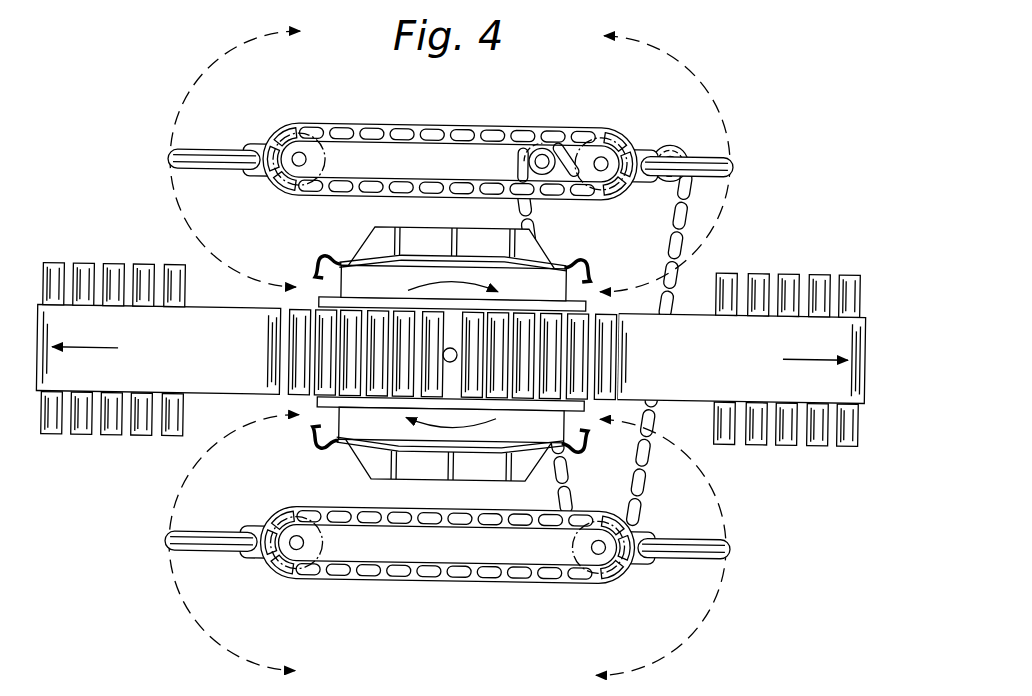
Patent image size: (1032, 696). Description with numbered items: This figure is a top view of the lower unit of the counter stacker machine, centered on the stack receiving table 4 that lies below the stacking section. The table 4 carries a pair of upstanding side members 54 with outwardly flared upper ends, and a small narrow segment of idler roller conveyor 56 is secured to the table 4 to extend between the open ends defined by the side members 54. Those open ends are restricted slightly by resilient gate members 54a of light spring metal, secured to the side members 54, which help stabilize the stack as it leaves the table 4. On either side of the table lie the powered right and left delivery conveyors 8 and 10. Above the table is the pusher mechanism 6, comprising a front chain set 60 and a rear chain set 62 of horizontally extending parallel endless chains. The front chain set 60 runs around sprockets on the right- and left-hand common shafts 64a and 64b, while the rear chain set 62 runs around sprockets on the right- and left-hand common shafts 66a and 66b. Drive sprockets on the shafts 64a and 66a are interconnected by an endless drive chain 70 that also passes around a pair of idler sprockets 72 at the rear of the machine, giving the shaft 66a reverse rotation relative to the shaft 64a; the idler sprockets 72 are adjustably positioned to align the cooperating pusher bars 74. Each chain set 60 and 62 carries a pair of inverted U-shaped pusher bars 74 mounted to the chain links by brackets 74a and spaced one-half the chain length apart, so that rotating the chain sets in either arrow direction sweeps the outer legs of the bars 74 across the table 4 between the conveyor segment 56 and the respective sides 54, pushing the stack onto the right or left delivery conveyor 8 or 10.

The stack receiving table 4 is at (441, 357).
The pusher mechanism 6 is at (449, 351).
The right output conveyor 8 is at (770, 365).
The left output conveyor 10 is at (146, 366).
The upstanding side member 54 is at (435, 229).
The resilient gate member 54a is at (311, 268).
The idler roller conveyor segment 56 is at (377, 318).
The front chain set 60 is at (444, 579).
The rear chain set 62 is at (372, 125).
The right-hand common shaft 64a is at (596, 546).
The left-hand common shaft 64b is at (308, 545).
The right-hand common shaft 66a is at (599, 153).
The left-hand common shaft 66b is at (294, 156).
The endless drive chain 70 is at (688, 232).
The idler sprocket 72 is at (669, 147).
The pusher bar 74 is at (165, 159).
The bracket 74a is at (255, 148).